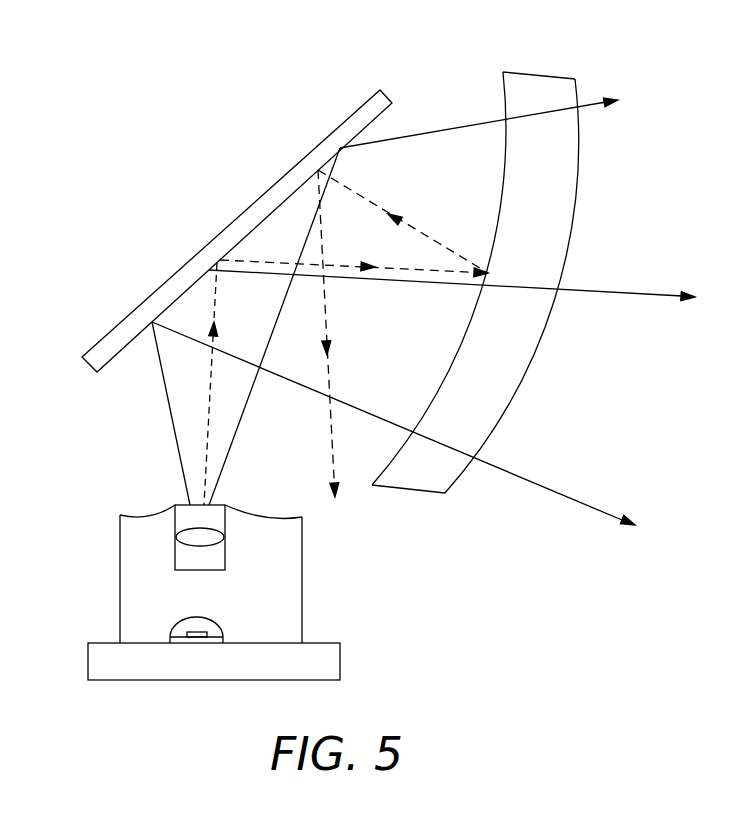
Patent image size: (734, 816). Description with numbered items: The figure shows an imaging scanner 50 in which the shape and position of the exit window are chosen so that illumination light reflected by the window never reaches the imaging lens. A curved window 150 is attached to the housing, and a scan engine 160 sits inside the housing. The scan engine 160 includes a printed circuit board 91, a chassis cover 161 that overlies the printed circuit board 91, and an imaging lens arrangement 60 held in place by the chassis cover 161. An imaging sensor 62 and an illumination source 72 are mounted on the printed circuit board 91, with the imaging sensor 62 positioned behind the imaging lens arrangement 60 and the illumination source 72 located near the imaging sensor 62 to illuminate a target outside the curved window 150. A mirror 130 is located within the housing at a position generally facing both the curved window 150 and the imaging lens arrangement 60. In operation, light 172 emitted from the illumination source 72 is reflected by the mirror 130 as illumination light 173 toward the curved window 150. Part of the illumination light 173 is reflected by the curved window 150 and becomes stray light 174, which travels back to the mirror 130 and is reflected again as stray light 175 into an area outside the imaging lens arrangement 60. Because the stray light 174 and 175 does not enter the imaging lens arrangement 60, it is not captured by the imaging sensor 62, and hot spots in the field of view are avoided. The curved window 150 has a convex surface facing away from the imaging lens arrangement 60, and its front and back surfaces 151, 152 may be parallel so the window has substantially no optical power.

The imaging scanner 50 is at (66, 288).
The mirror 130 is at (345, 121).
The curved window 150 is at (540, 72).
The front surface 151 is at (503, 107).
The back surface 152 is at (580, 88).
The scan engine 160 is at (280, 590).
The chassis cover 161 is at (263, 518).
The imaging lens arrangement 60 is at (177, 558).
The illumination source 72 is at (178, 627).
The imaging sensor 62 is at (190, 643).
The printed circuit board 91 is at (88, 660).
The light 172 is at (218, 297).
The illumination light 173 is at (352, 258).
The stray light 174 is at (458, 257).
The stray light 175 is at (333, 442).